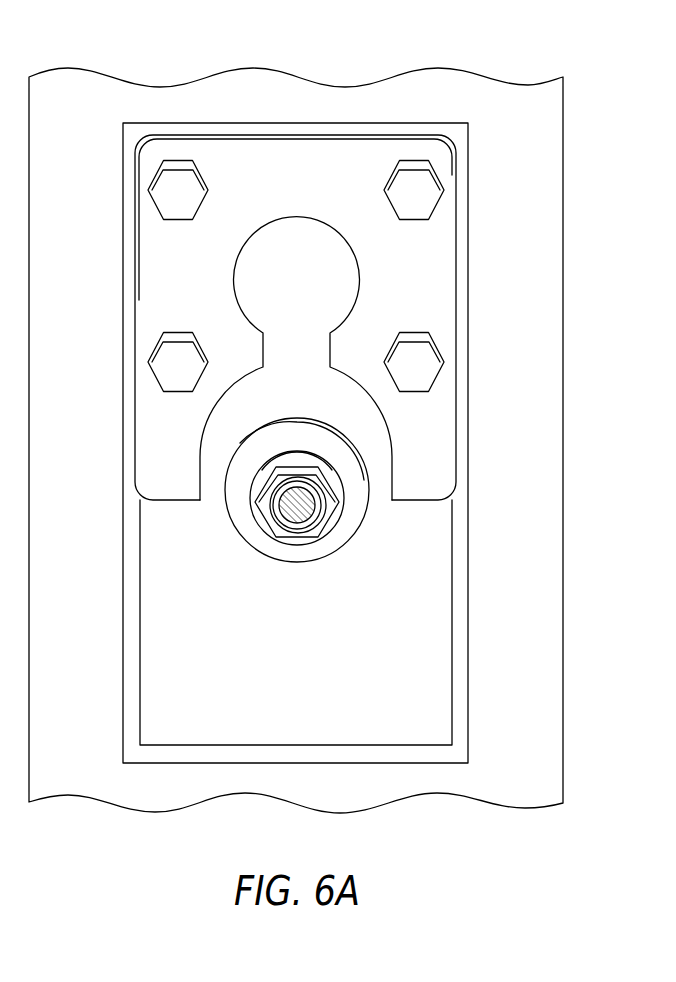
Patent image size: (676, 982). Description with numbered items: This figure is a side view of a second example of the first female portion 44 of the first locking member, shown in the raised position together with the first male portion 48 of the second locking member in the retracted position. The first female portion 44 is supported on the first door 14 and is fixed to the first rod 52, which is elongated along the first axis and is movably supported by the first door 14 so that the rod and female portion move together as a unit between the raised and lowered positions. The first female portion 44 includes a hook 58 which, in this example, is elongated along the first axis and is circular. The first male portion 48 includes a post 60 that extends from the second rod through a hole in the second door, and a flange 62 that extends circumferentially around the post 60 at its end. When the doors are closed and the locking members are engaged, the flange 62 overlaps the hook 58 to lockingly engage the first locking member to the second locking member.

The first door 14 is at (500, 107).
The first female portion 44 is at (423, 265).
The first male portion 48 is at (262, 560).
The first rod 52 is at (422, 663).
The hook 58 is at (312, 218).
The post 60 is at (297, 506).
The flange 62 is at (293, 416).